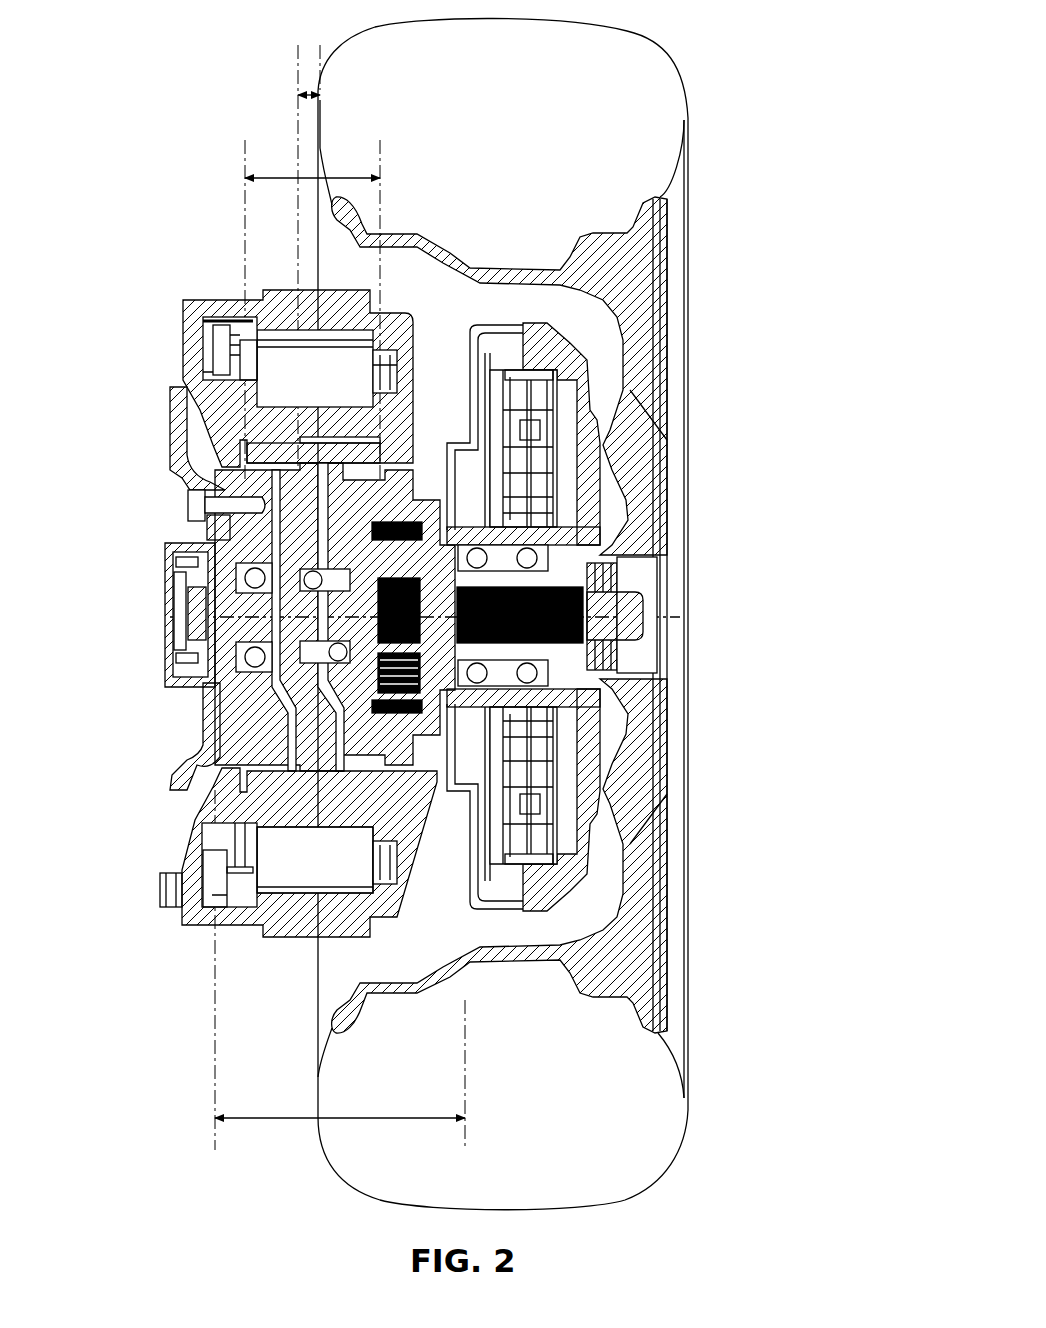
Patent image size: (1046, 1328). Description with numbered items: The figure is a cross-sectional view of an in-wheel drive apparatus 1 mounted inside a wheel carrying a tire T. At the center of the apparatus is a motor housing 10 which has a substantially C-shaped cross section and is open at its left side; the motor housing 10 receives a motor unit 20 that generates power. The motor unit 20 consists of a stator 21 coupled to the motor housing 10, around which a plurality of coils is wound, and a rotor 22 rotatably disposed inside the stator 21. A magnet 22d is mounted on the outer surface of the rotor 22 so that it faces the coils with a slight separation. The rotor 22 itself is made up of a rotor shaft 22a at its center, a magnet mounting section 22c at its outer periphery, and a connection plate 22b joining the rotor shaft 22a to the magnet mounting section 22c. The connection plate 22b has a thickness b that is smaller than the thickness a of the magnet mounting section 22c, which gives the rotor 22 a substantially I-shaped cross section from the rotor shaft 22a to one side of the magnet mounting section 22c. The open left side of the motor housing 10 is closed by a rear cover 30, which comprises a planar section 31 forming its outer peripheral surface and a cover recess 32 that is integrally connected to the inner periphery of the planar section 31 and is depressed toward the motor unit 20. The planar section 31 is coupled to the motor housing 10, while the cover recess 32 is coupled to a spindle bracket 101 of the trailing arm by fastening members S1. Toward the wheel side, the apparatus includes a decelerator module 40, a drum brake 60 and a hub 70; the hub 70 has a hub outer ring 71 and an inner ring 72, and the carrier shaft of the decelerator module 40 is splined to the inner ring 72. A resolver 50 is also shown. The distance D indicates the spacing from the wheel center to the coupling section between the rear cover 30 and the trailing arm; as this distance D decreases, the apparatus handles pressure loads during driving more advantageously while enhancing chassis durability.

The in-wheel drive apparatus 1 is at (717, 150).
The tire T is at (655, 65).
The motor housing 10 is at (280, 285).
The motor unit 20 is at (243, 807).
The stator 21 is at (290, 880).
The rotor 22 is at (217, 693).
The rotor shaft 22a is at (453, 575).
The connection plate 22b is at (228, 587).
The magnet mounting section 22c is at (500, 415).
The magnet 22d is at (262, 428).
The rear cover 30 is at (185, 352).
The planar section 31 is at (196, 320).
The cover recess 32 is at (245, 520).
The decelerator module 40 is at (617, 583).
The resolver 50 is at (240, 567).
The drum brake 60 is at (573, 330).
The hub 70 is at (650, 615).
The hub outer ring 71 is at (600, 678).
The inner ring 72 is at (680, 753).
The spindle bracket 101 is at (200, 727).
The fastening members S1 is at (190, 505).
The thickness of the magnet mounting section a is at (312, 165).
The thickness of the connection plate b is at (316, 94).
The distance from the wheel center to the chassis coupling section D is at (340, 1103).